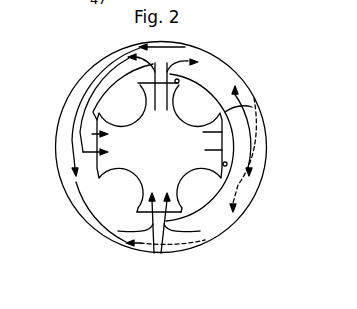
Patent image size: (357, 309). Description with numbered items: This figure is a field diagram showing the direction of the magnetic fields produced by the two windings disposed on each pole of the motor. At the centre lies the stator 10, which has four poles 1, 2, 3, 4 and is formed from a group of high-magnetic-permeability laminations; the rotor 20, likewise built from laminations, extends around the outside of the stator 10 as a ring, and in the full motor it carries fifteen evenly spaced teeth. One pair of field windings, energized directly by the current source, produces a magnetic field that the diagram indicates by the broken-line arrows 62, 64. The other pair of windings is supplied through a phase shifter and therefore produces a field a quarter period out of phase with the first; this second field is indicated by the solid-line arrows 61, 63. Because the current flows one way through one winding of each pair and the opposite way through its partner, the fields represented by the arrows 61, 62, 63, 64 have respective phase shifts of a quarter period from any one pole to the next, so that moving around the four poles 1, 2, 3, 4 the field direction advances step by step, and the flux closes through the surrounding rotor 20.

The pole 1 is at (187, 91).
The pole 2 is at (211, 179).
The pole 3 is at (117, 184).
The pole 4 is at (103, 109).
The stator 10 is at (167, 147).
The rotor 20 is at (227, 74).
The solid-line arrow 61 is at (168, 52).
The broken-line arrow 62 is at (262, 136).
The solid-line arrow 63 is at (161, 235).
The broken-line arrow 64 is at (83, 152).